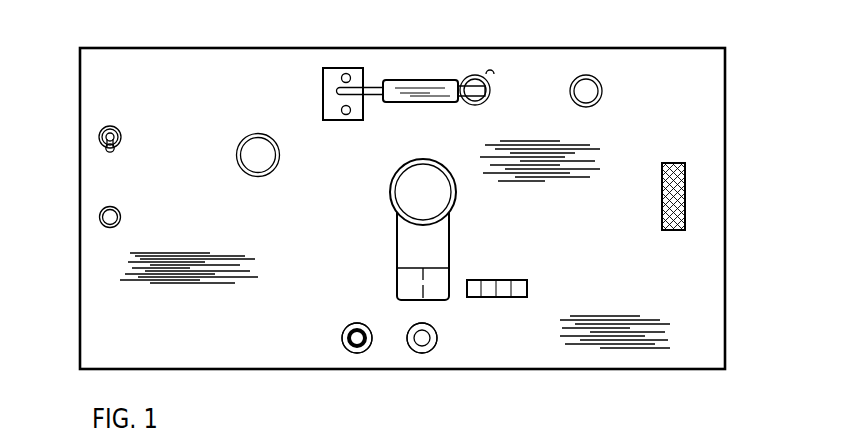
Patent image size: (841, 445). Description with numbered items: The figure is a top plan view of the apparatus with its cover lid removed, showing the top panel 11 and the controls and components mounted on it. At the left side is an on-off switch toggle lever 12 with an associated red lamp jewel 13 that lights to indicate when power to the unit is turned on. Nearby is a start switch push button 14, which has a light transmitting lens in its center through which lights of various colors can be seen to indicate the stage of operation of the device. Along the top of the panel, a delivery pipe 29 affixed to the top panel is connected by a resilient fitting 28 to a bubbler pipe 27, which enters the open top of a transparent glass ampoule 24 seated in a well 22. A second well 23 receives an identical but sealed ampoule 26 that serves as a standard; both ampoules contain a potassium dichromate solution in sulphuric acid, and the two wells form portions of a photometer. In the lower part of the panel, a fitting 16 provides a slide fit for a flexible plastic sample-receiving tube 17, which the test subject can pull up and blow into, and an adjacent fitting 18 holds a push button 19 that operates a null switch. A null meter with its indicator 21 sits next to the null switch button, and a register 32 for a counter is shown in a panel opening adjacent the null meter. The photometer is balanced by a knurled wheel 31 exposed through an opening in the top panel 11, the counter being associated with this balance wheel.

The top panel 11 is at (670, 358).
The on-off switch toggle lever 12 is at (104, 140).
The red lamp jewel 13 is at (108, 216).
The start switch push button 14 is at (257, 142).
The fitting 16 is at (367, 346).
The flexible plastic sample-receiving tube 17 is at (352, 345).
The fitting 18 is at (418, 348).
The push button 19 is at (428, 347).
The null meter indicator 21 is at (397, 246).
The well 22 is at (492, 73).
The well 23 is at (603, 87).
The transparent glass ampoule 24 is at (474, 78).
The transparent glass ampoule 26 is at (585, 88).
The bubbler pipe 27 is at (484, 92).
The resilient fitting 28 is at (435, 80).
The delivery pipe 29 is at (372, 82).
The knurled wheel 31 is at (680, 189).
The register 32 is at (502, 297).